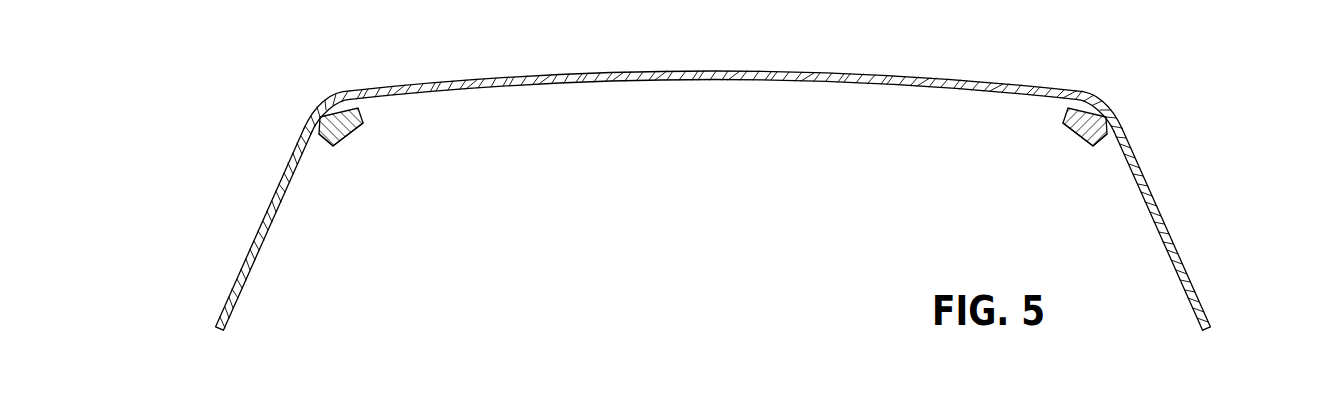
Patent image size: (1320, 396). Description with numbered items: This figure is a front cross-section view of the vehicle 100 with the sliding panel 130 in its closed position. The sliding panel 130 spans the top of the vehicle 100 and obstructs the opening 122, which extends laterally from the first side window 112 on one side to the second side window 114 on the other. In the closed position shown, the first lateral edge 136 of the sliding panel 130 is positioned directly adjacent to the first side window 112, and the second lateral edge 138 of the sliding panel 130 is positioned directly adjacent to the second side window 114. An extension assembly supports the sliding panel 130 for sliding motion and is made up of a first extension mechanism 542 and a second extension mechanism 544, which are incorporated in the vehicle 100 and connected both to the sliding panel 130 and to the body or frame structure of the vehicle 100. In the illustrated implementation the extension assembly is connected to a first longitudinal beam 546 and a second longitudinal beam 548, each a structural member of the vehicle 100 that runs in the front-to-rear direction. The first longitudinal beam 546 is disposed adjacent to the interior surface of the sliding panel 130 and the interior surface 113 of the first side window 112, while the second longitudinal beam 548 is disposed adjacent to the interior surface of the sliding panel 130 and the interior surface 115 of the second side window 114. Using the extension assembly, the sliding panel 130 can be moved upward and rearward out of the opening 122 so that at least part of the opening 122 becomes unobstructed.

The vehicle 100 is at (707, 166).
The first side window 112 is at (1163, 228).
The interior surface of the first side window 113 is at (1157, 238).
The second side window 114 is at (252, 228).
The interior surface of the second side window 115 is at (255, 253).
The opening 122 is at (715, 93).
The sliding panel 130 is at (716, 89).
The first lateral edge 136 is at (1115, 127).
The second lateral edge 138 is at (307, 126).
The first extension mechanism 542 is at (1142, 139).
The second extension mechanism 544 is at (376, 122).
The first longitudinal beam 546 is at (1083, 130).
The second longitudinal beam 548 is at (343, 130).